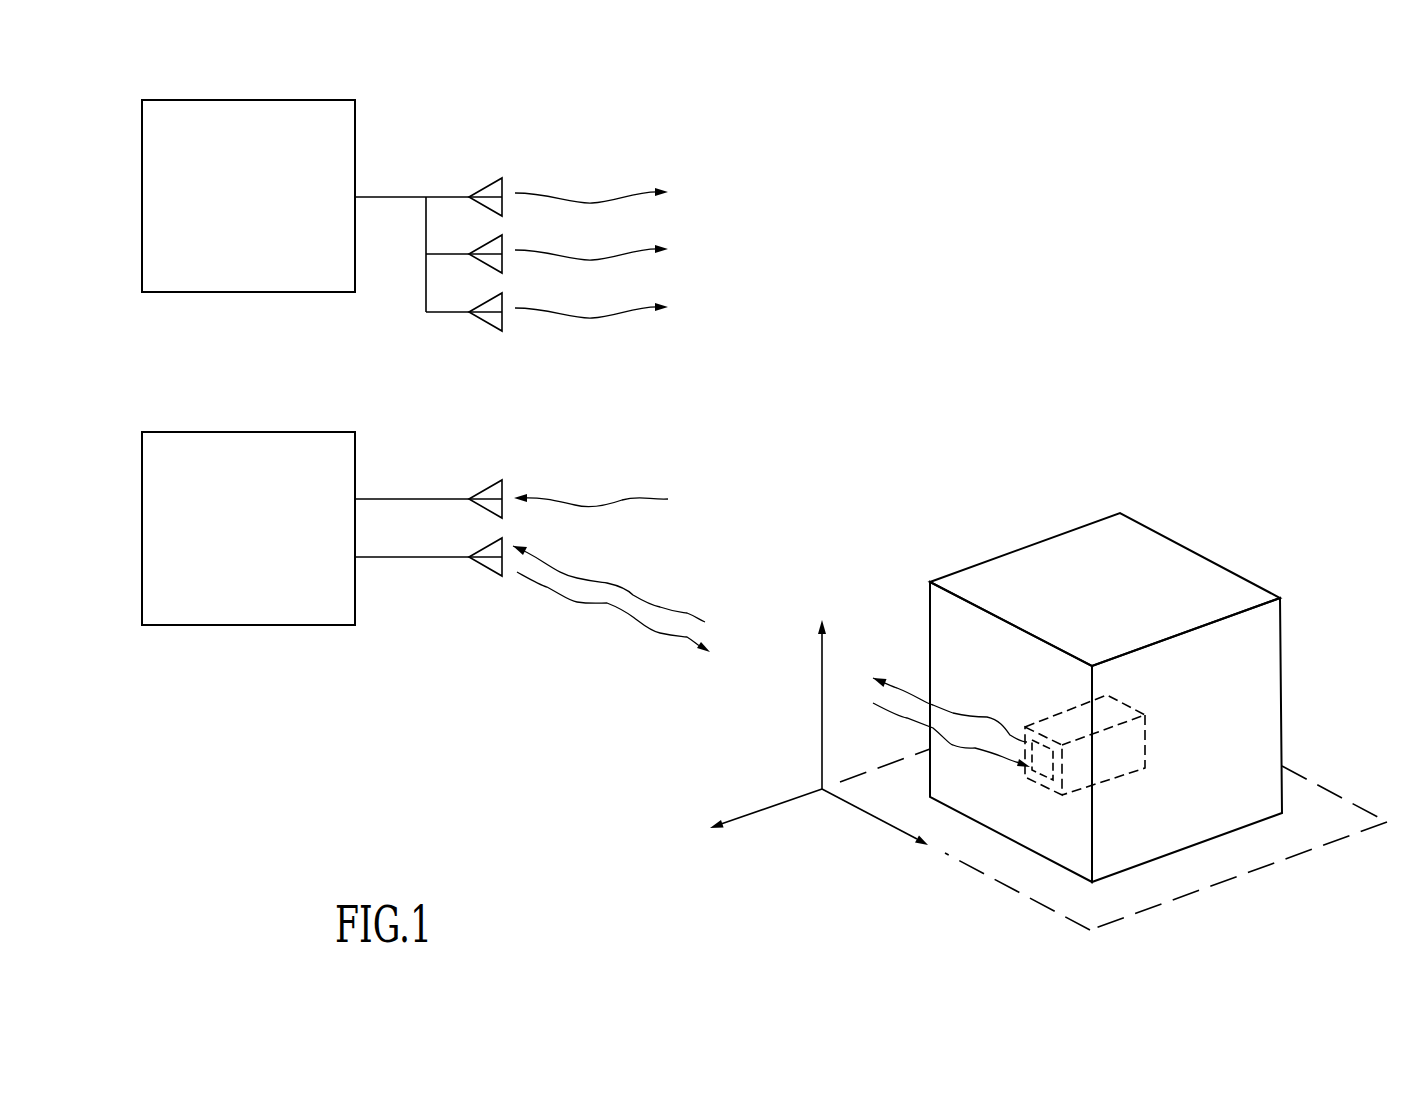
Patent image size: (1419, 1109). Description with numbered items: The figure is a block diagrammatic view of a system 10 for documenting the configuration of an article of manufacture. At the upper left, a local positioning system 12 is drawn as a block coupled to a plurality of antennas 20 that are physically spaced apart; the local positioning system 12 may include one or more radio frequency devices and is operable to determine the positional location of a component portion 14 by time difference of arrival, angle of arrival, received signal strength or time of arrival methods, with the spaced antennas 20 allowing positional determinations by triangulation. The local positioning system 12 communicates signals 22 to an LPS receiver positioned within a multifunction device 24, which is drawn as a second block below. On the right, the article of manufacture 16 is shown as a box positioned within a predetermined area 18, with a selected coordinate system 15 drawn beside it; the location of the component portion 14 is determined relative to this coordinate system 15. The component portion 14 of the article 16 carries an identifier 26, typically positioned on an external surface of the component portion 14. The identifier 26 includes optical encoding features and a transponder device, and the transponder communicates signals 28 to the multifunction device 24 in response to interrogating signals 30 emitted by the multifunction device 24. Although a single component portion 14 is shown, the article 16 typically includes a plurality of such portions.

The system 10 is at (1031, 176).
The local positioning system 12 is at (297, 100).
The component portion 14 is at (1062, 722).
The coordinate system 15 is at (799, 766).
The article of manufacture 16 is at (1203, 556).
The predetermined area 18 is at (1322, 785).
The antennas 20 is at (527, 344).
The signals 22 is at (617, 195).
The multifunction device 24 is at (265, 432).
The identifier 26 is at (1043, 767).
The signals 28 is at (608, 584).
The interrogating signals 30 is at (602, 605).